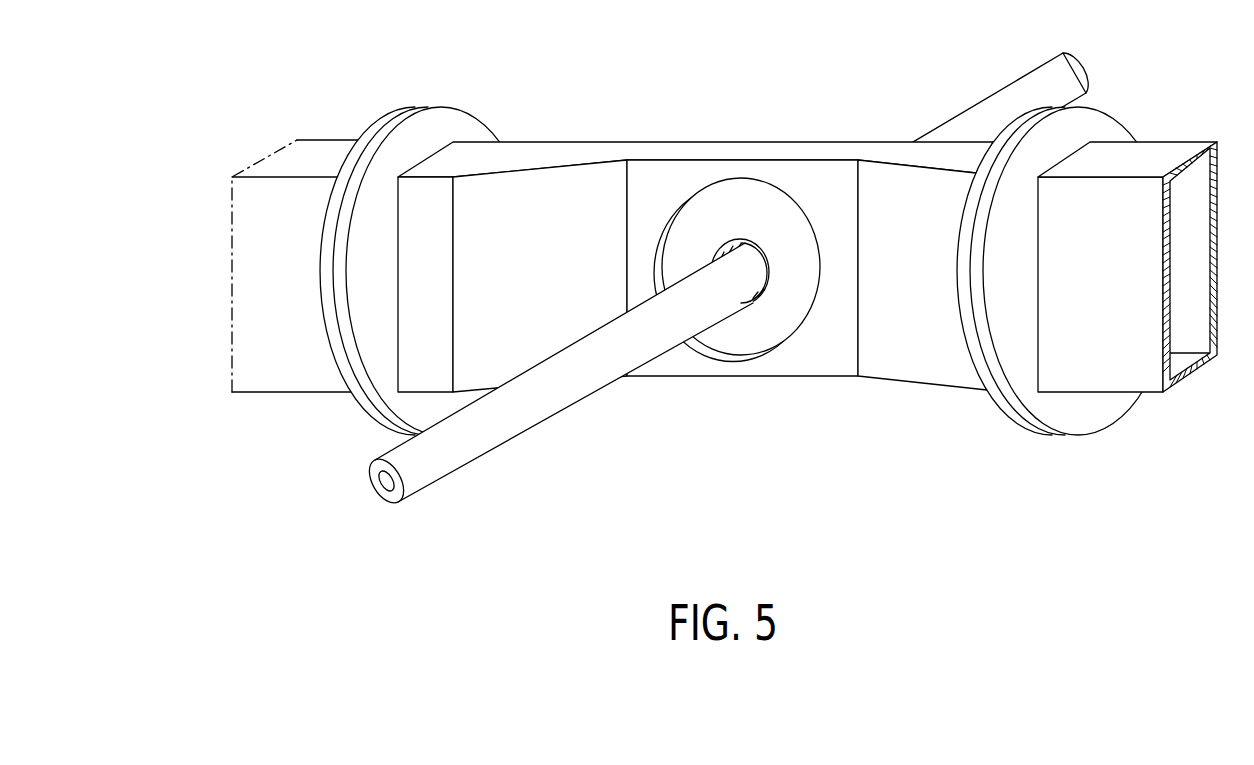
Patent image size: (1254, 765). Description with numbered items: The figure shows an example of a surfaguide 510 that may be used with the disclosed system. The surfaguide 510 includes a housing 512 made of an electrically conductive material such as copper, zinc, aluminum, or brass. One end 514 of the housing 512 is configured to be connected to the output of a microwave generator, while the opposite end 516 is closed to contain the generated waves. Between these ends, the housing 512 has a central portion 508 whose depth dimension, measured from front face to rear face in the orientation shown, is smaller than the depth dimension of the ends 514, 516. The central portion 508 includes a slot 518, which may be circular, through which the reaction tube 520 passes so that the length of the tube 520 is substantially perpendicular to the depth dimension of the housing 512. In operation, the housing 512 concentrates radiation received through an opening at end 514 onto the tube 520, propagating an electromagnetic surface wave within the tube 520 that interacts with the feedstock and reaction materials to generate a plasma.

The central portion 508 is at (792, 142).
The surfaguide 510 is at (690, 413).
The housing 512 is at (555, 140).
The one end 514 is at (298, 140).
The opposite end 516 is at (1155, 142).
The slot 518 is at (748, 305).
The reaction tube 520 is at (427, 487).